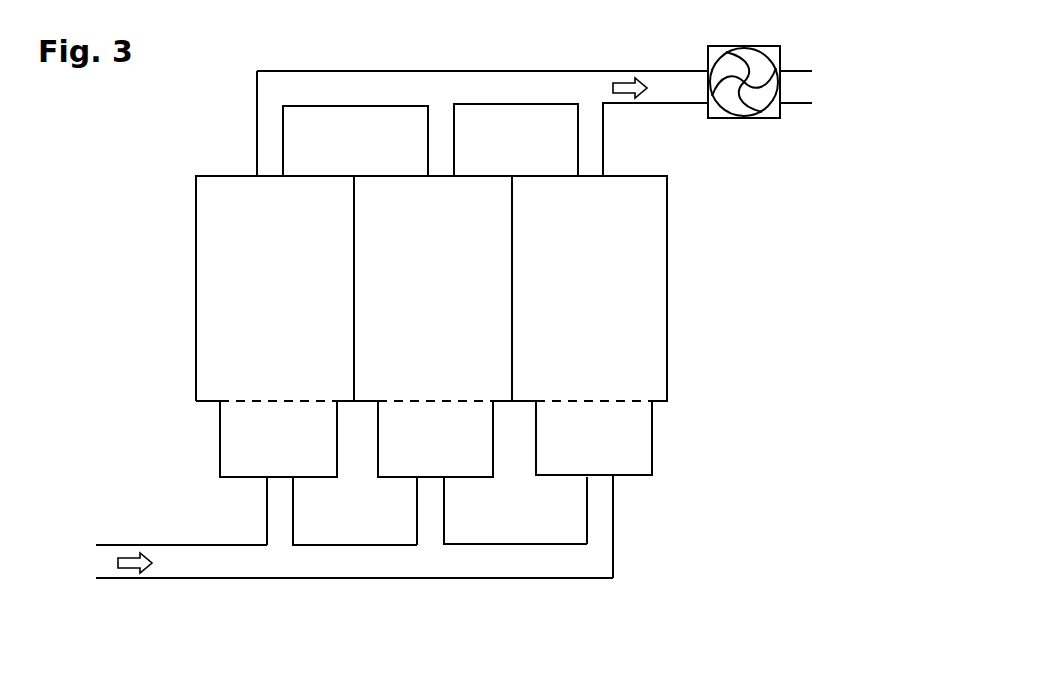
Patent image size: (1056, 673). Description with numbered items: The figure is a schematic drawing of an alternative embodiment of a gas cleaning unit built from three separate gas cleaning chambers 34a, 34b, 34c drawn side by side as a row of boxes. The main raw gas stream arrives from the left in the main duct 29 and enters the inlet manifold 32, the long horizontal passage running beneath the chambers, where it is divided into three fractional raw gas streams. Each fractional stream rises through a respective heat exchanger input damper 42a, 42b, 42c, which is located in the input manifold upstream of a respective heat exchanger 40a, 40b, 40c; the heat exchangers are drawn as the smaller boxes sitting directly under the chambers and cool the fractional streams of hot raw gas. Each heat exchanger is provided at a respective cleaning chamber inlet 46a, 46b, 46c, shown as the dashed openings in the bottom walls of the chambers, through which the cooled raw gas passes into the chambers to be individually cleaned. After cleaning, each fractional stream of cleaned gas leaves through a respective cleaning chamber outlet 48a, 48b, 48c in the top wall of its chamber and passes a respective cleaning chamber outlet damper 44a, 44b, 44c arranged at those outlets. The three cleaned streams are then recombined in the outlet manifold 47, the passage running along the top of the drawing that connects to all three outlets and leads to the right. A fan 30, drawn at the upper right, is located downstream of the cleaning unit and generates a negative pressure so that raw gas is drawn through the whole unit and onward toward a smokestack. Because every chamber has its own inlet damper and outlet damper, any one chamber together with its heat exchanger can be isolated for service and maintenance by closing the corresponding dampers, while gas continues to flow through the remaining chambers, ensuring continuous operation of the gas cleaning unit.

The main duct 29 is at (190, 578).
The fan 30 is at (737, 118).
The inlet manifold 32 is at (315, 578).
The gas cleaning chamber 34a is at (275, 288).
The gas cleaning chamber 34b is at (424, 288).
The gas cleaning chamber 34c is at (580, 288).
The heat exchanger 40a is at (278, 439).
The heat exchanger 40b is at (435, 439).
The heat exchanger 40c is at (594, 438).
The heat exchanger input damper 42a is at (285, 497).
The heat exchanger input damper 42b is at (437, 497).
The heat exchanger input damper 42c is at (605, 493).
The cleaning chamber outlet damper 44a is at (276, 132).
The cleaning chamber outlet damper 44b is at (447, 132).
The cleaning chamber outlet damper 44c is at (595, 130).
The cleaning chamber inlet 46a is at (280, 400).
The cleaning chamber inlet 46b is at (430, 400).
The cleaning chamber inlet 46c is at (597, 400).
The outlet manifold 47 is at (512, 70).
The cleaning chamber outlet 48a is at (273, 177).
The cleaning chamber outlet 48b is at (432, 177).
The cleaning chamber outlet 48c is at (595, 177).